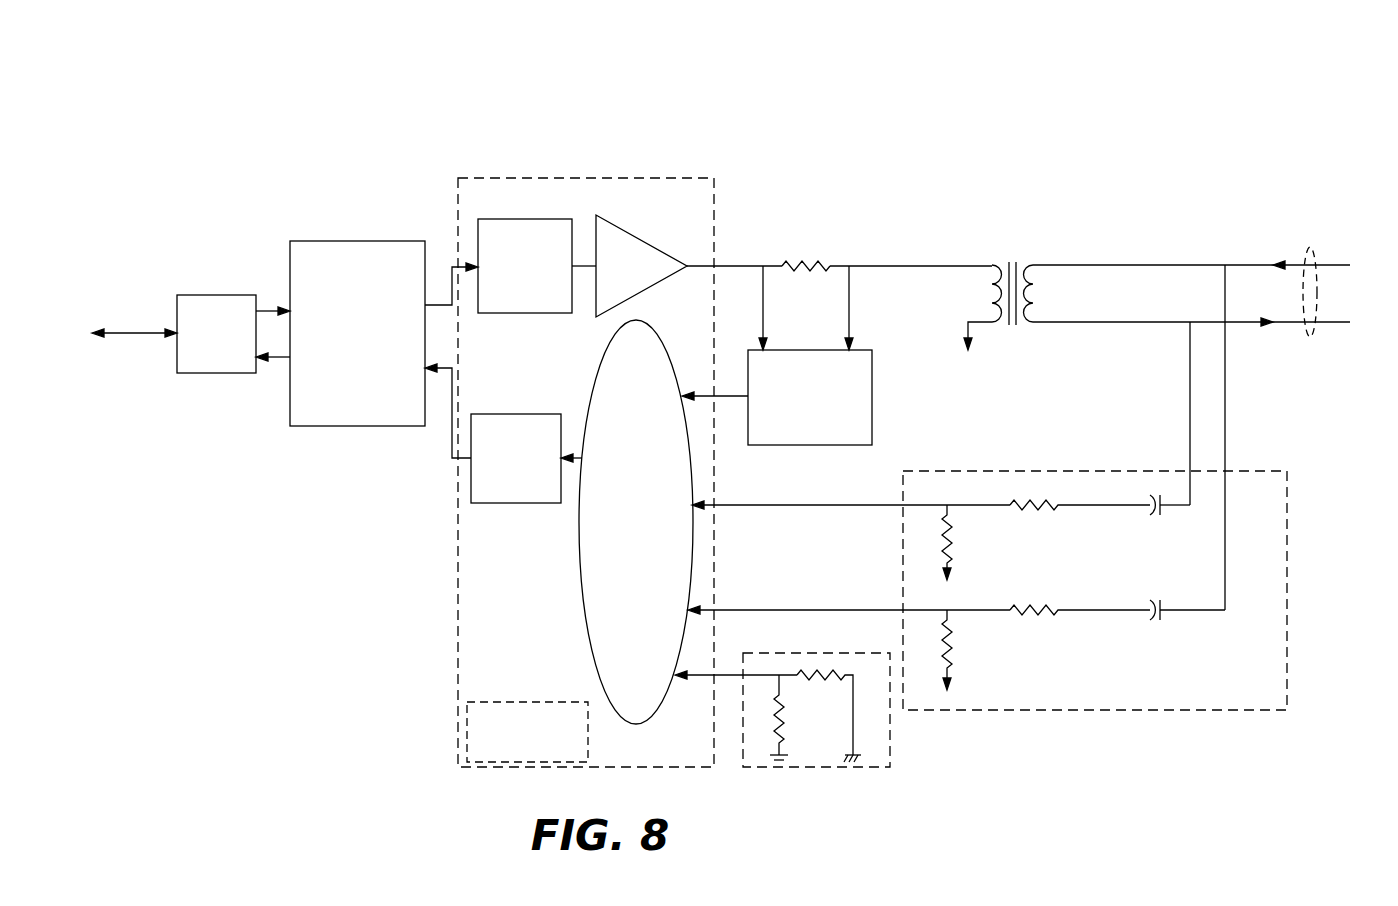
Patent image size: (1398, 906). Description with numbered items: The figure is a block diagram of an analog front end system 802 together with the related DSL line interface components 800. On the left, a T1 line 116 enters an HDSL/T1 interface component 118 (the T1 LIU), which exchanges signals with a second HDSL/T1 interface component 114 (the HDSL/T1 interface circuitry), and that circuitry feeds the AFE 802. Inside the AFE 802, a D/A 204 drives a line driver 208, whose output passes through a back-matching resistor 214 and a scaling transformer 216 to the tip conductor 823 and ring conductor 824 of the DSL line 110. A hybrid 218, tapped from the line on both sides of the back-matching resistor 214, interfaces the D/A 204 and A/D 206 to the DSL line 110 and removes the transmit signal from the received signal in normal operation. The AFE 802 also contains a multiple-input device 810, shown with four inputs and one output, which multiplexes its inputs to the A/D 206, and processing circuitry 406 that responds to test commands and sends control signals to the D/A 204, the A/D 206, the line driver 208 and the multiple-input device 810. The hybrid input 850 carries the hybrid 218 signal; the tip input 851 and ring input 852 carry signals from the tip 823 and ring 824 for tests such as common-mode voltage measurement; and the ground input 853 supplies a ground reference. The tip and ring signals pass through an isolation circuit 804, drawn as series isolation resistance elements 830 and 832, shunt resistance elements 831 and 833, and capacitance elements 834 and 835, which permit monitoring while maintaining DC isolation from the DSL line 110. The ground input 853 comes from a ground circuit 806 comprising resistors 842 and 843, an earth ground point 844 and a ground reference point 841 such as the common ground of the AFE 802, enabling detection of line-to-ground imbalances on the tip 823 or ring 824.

The DSL line interface components 800 is at (853, 106).
The T1 line 116 is at (145, 340).
The HDSL/T1 interface component 118 is at (222, 295).
The HDSL/T1 interface component 114 is at (355, 240).
The analog front end (AFE) system 802 is at (508, 178).
The digital-to-analog converter (D/A) 204 is at (478, 238).
The line driver 208 is at (627, 236).
The analog-to-digital converter (A/D) 206 is at (523, 414).
The multiple-input device 810 is at (583, 605).
The processing circuitry 406 is at (508, 763).
The back-matching resistor 214 is at (773, 197).
The scaling transformer 216 is at (986, 204).
The hybrid 218 is at (803, 447).
The hybrid input 850 is at (690, 390).
The tip input 851 is at (702, 503).
The ring input 852 is at (702, 606).
The ground input 853 is at (690, 672).
The ring conductor 824 is at (1232, 262).
The tip conductor 823 is at (1240, 322).
The DSL line 110 is at (1315, 250).
The isolation circuit 804 is at (1290, 595).
The isolation resistance element 830 is at (1050, 507).
The isolation resistance element 831 is at (950, 535).
The isolation resistance element 832 is at (1050, 612).
The isolation resistance element 833 is at (950, 652).
The capacitance element 834 is at (1160, 510).
The capacitance element 835 is at (1160, 615).
The ground circuit 806 is at (775, 790).
The resistor 842 is at (825, 670).
The resistor 843 is at (790, 730).
The earth ground point 844 is at (775, 762).
The ground reference point 841 is at (862, 755).